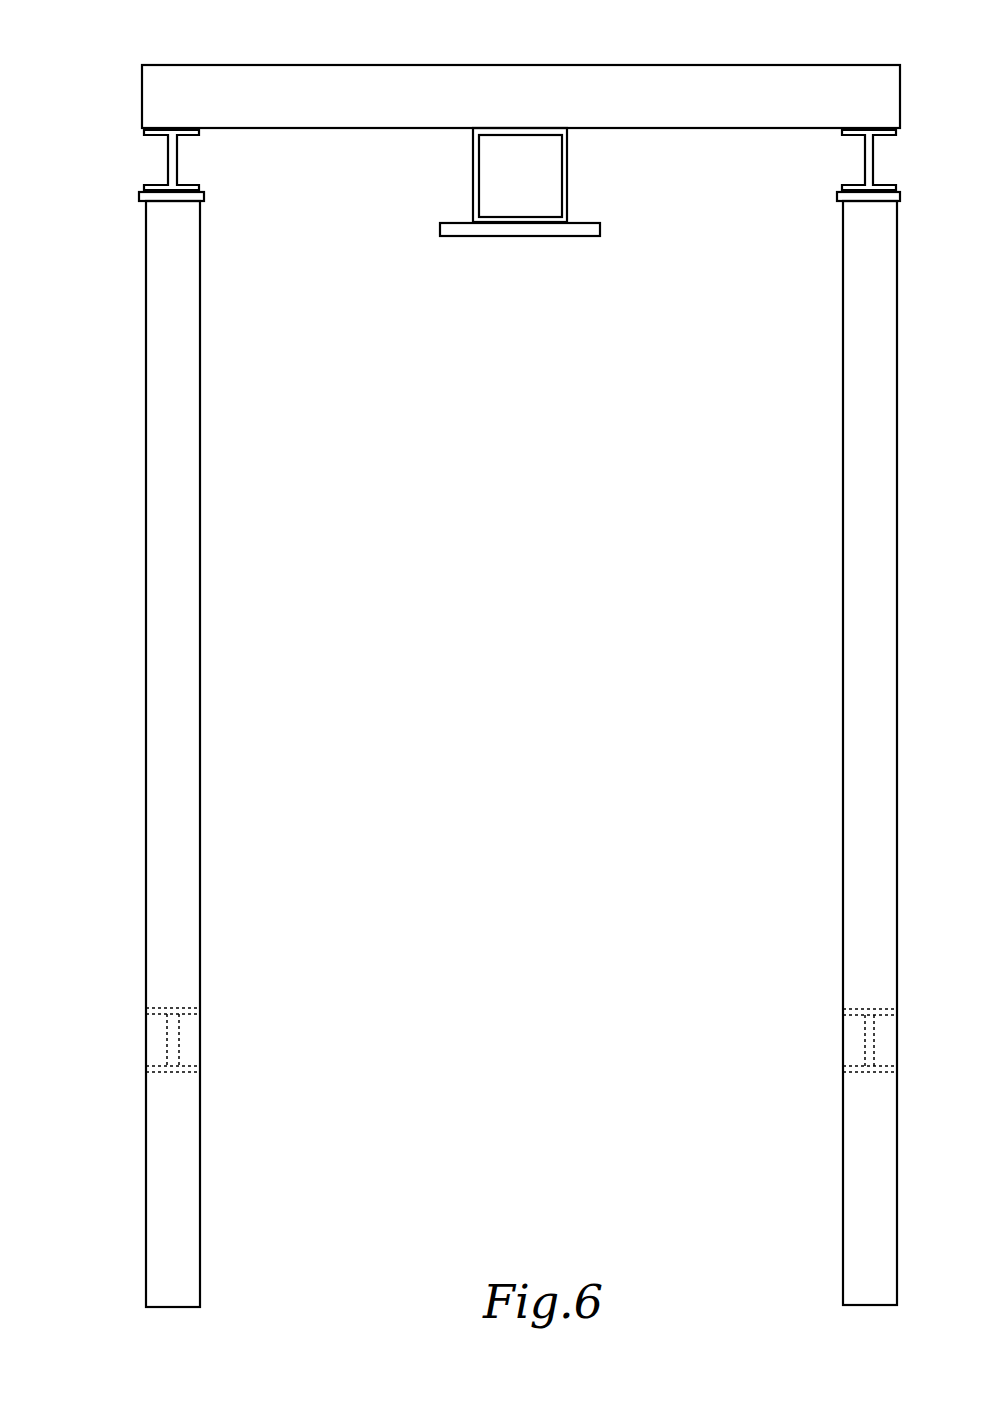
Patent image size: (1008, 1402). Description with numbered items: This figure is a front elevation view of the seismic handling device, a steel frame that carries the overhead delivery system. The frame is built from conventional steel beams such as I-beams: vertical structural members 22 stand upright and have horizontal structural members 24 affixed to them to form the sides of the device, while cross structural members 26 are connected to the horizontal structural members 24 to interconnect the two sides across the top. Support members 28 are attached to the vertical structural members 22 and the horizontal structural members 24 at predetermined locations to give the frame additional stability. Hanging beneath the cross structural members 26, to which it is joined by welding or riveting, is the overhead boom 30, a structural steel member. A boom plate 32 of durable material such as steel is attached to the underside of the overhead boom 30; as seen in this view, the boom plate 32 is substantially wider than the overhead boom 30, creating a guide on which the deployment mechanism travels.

The vertical structural members 22 is at (476, 656).
The horizontal structural members 24 is at (168, 160).
The cross structural members 26 is at (400, 64).
The support members 28 is at (180, 1008).
The overhead boom 30 is at (569, 190).
The boom plate 32 is at (480, 236).